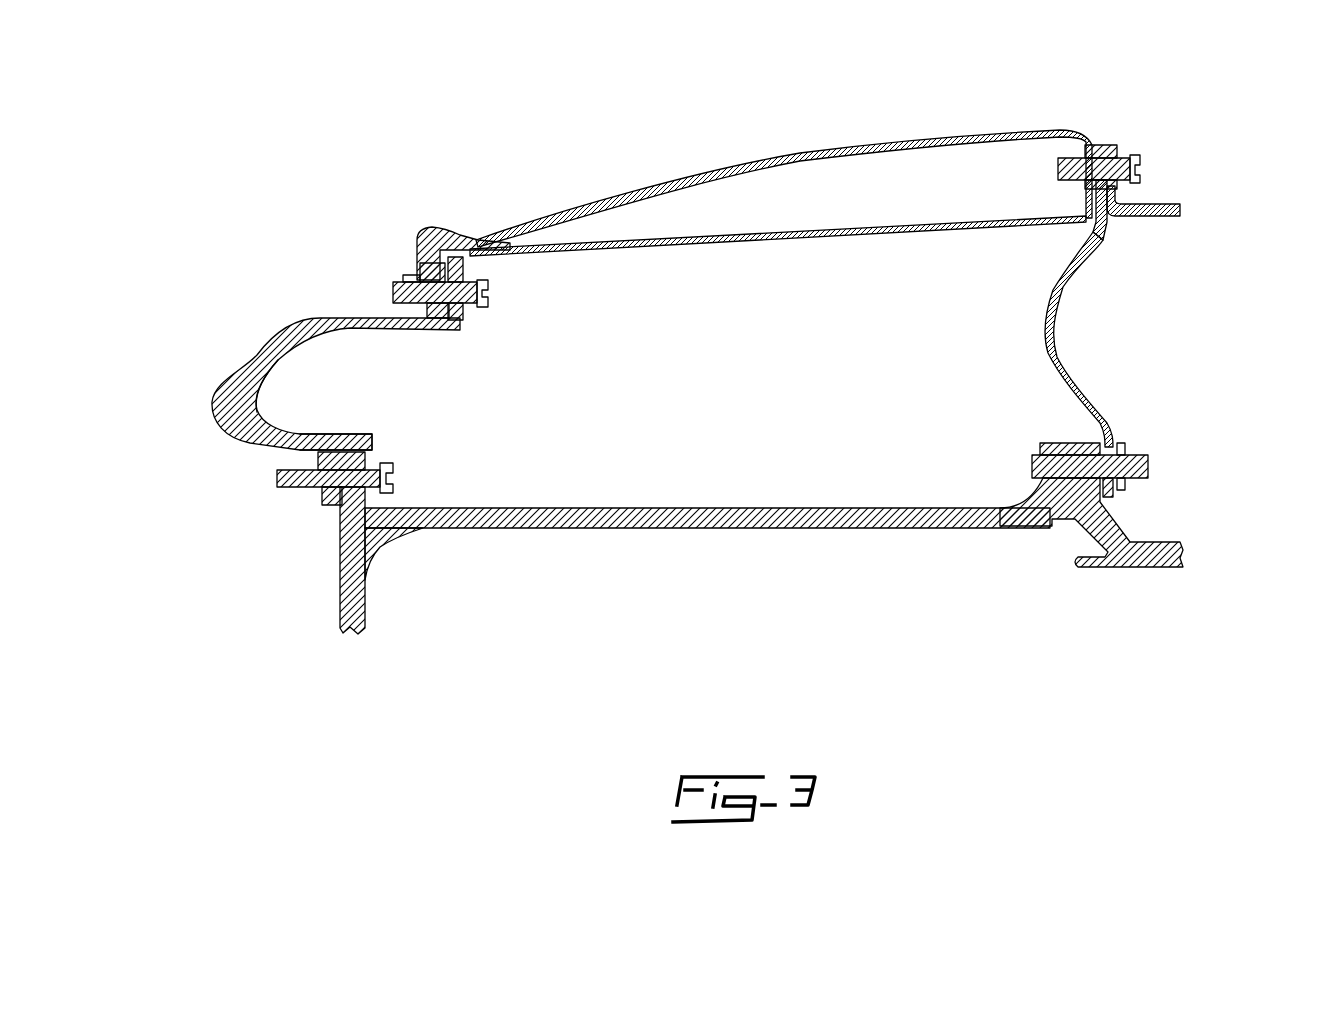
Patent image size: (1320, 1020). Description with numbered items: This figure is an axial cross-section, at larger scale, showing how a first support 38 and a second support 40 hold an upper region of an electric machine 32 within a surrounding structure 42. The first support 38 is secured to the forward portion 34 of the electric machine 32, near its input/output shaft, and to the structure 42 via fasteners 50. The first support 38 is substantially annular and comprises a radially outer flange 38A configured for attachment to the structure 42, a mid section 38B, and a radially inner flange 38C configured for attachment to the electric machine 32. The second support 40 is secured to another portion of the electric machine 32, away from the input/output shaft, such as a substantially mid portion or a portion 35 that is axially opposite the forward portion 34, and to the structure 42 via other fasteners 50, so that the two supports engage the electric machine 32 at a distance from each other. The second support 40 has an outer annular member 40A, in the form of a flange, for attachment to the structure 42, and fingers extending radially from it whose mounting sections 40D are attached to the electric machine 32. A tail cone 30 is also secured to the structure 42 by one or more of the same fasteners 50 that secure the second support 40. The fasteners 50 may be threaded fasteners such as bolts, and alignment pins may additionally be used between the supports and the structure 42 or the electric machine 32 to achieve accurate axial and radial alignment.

The tail cone 30 is at (1167, 203).
The electric machine 32 is at (743, 529).
The forward portion 34 is at (302, 617).
The portion 35 is at (1224, 381).
The first support 38 is at (281, 345).
The radially outer flange 38A is at (464, 263).
The mid section 38B is at (258, 403).
The radially inner flange 38C is at (323, 503).
The second support 40 is at (1048, 328).
The outer annular member 40A is at (1101, 212).
The mounting section 40D is at (1127, 489).
The structure 42 is at (772, 157).
The fasteners 50 is at (489, 302).